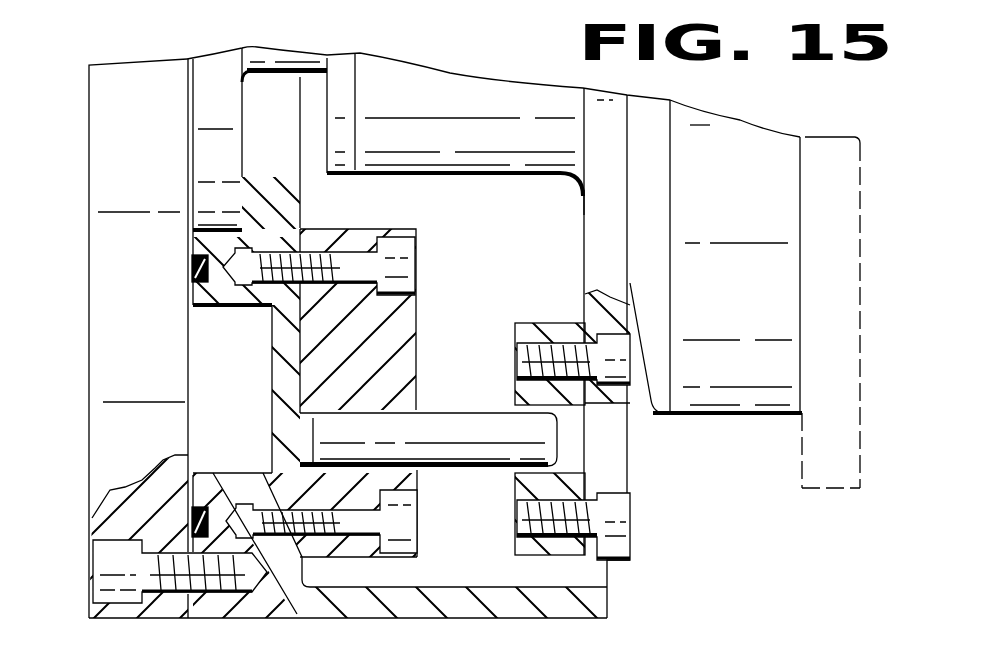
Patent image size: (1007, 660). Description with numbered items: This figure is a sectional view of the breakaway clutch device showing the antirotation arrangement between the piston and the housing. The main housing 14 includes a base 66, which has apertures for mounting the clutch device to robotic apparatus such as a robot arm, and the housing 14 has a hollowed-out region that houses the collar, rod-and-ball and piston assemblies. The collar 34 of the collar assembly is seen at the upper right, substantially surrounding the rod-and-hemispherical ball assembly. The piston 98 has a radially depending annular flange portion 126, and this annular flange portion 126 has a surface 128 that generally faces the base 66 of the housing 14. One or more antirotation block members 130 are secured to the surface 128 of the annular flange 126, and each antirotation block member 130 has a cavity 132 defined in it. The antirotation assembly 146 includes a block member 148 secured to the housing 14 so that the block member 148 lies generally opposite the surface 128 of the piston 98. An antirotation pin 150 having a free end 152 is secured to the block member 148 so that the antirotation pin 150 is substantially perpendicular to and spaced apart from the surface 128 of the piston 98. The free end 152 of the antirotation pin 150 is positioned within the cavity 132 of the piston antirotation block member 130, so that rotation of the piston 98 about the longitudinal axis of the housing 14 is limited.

The piston 98 is at (453, 107).
The annular flange portion 126 is at (600, 208).
The surface 128 is at (585, 239).
The antirotation block member 130 is at (527, 323).
The antirotation pin 150 is at (460, 433).
The free end 152 is at (557, 443).
The cavity 132 is at (578, 465).
The collar 34 is at (763, 410).
The base 66 is at (115, 510).
The main housing 14 is at (275, 603).
The block member 148 is at (350, 553).
The antirotation assembly 146 is at (438, 548).